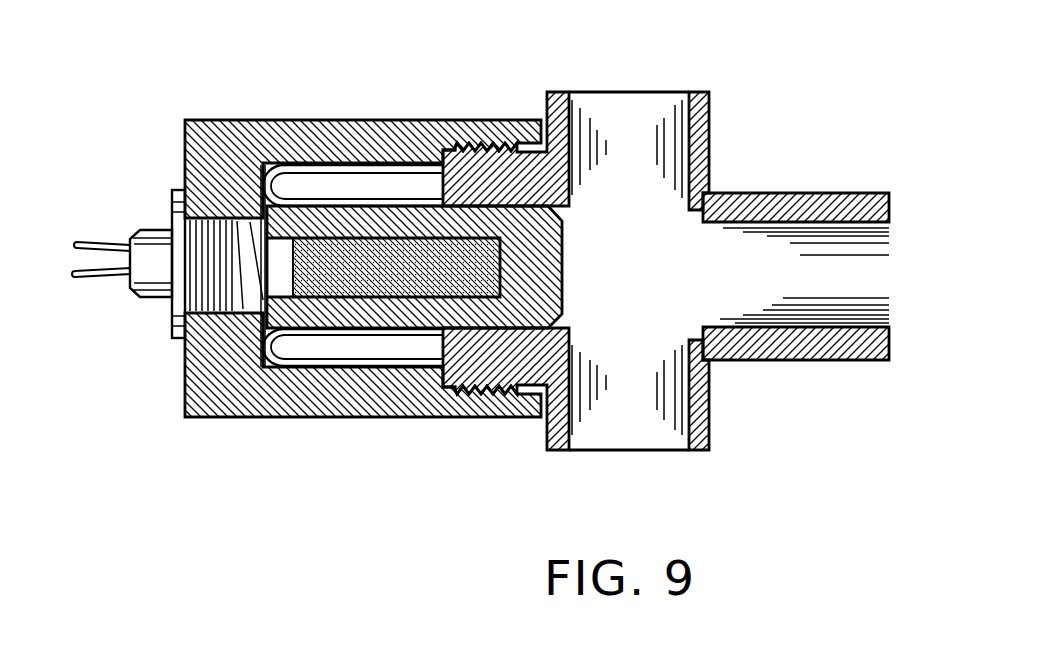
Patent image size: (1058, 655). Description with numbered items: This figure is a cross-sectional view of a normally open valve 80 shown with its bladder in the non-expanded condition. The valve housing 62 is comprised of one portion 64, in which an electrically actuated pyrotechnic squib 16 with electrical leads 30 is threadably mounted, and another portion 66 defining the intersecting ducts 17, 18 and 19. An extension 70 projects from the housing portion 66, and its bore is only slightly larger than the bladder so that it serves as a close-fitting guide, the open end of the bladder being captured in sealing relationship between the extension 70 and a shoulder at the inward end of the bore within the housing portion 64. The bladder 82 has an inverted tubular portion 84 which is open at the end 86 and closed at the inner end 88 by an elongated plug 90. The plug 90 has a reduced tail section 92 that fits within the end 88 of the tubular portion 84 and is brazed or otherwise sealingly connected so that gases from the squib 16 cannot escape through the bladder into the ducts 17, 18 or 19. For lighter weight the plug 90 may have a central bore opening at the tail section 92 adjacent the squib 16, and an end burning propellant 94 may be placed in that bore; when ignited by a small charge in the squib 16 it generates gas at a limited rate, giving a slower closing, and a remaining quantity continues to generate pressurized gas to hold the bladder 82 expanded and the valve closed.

The squib 16 is at (155, 230).
The duct 17 is at (713, 108).
The duct 18 is at (712, 418).
The duct 19 is at (800, 198).
The electrical leads 30 is at (100, 246).
The housing 62 is at (394, 113).
The housing portion 64 is at (327, 118).
The housing portion 66 is at (716, 167).
The extension 70 is at (514, 160).
The normally open valve 80 is at (212, 88).
The bladder 82 is at (268, 367).
The inverted tubular portion 84 is at (372, 363).
The open end 86 is at (417, 153).
The inner end 88 is at (338, 198).
The plug 90 is at (556, 244).
The tail section 92 is at (327, 315).
The end burning propellant 94 is at (500, 273).